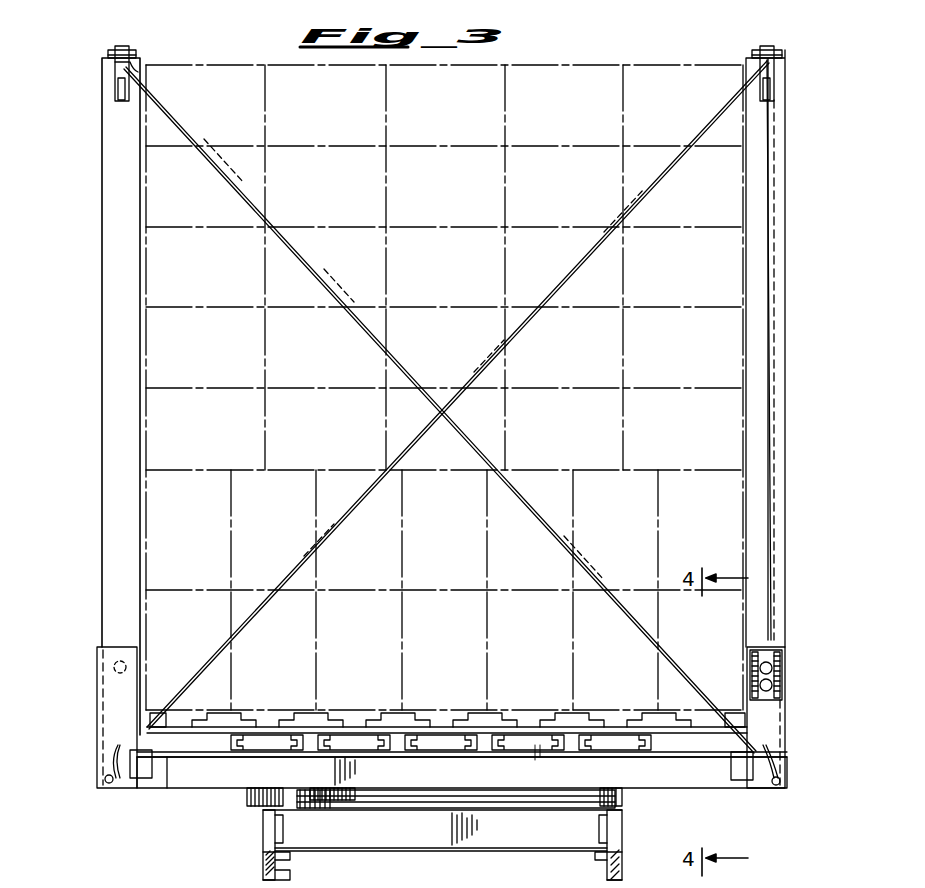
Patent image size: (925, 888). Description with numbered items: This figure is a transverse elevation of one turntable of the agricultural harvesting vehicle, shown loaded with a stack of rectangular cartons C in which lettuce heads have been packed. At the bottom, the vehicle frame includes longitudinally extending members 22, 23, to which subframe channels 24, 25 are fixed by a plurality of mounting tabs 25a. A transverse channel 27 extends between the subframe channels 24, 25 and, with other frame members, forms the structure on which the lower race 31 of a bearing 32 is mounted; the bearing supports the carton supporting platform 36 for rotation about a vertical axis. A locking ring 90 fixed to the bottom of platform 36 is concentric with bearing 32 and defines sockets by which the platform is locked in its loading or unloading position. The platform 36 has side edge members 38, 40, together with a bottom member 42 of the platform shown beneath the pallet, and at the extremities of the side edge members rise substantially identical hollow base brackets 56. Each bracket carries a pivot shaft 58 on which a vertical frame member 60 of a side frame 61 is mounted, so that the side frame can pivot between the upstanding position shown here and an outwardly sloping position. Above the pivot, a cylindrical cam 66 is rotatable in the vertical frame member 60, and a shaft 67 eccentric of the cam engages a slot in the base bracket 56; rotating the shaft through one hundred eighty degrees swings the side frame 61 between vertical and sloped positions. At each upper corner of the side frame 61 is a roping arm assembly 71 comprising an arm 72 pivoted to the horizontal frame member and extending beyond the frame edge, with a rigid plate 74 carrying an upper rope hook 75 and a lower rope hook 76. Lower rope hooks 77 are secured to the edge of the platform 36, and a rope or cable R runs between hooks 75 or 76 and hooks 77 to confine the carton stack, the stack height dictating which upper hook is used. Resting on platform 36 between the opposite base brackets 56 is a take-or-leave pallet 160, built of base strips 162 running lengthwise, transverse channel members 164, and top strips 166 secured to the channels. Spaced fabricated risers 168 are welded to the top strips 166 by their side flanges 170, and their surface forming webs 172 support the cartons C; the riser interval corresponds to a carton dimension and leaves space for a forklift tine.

The carton C is at (172, 307).
The rope or cable R is at (560, 288).
The vertical frame member 60 is at (773, 512).
The side frame 61 is at (788, 425).
The roping arm assembly 71 is at (100, 50).
The arm 72 is at (126, 52).
The rigid plate 74 is at (113, 82).
The upper rope hook 75 is at (110, 66).
The lower rope hook 76 is at (119, 95).
The base bracket 56 is at (97, 710).
The shaft 67 is at (113, 669).
The cylindrical cam 66 is at (784, 684).
The lower rope hook 77 is at (116, 762).
The pivot shaft 58 is at (105, 782).
The side edge member 38 is at (142, 782).
The side edge member 40 is at (725, 788).
The carton supporting platform 36 is at (160, 800).
The bottom side beam 42 is at (212, 775).
The take-or-leave pallet 160 is at (300, 706).
The base strip 162 is at (358, 730).
The fabricated riser 168 is at (418, 715).
The side flange 170 is at (505, 716).
The surface forming web 172 is at (592, 716).
The channel member 164 is at (262, 744).
The top strip 166 is at (470, 752).
The locking ring 90 is at (252, 800).
The bearing 32 is at (428, 808).
The subframe channel 24 is at (285, 830).
The subframe channel 25 is at (604, 832).
The mounting tab 25a is at (263, 862).
The longitudinally extending member 22 is at (285, 866).
The longitudinally extending member 23 is at (607, 862).
The transverse channel 27 is at (478, 848).
The lower race 31 is at (500, 810).